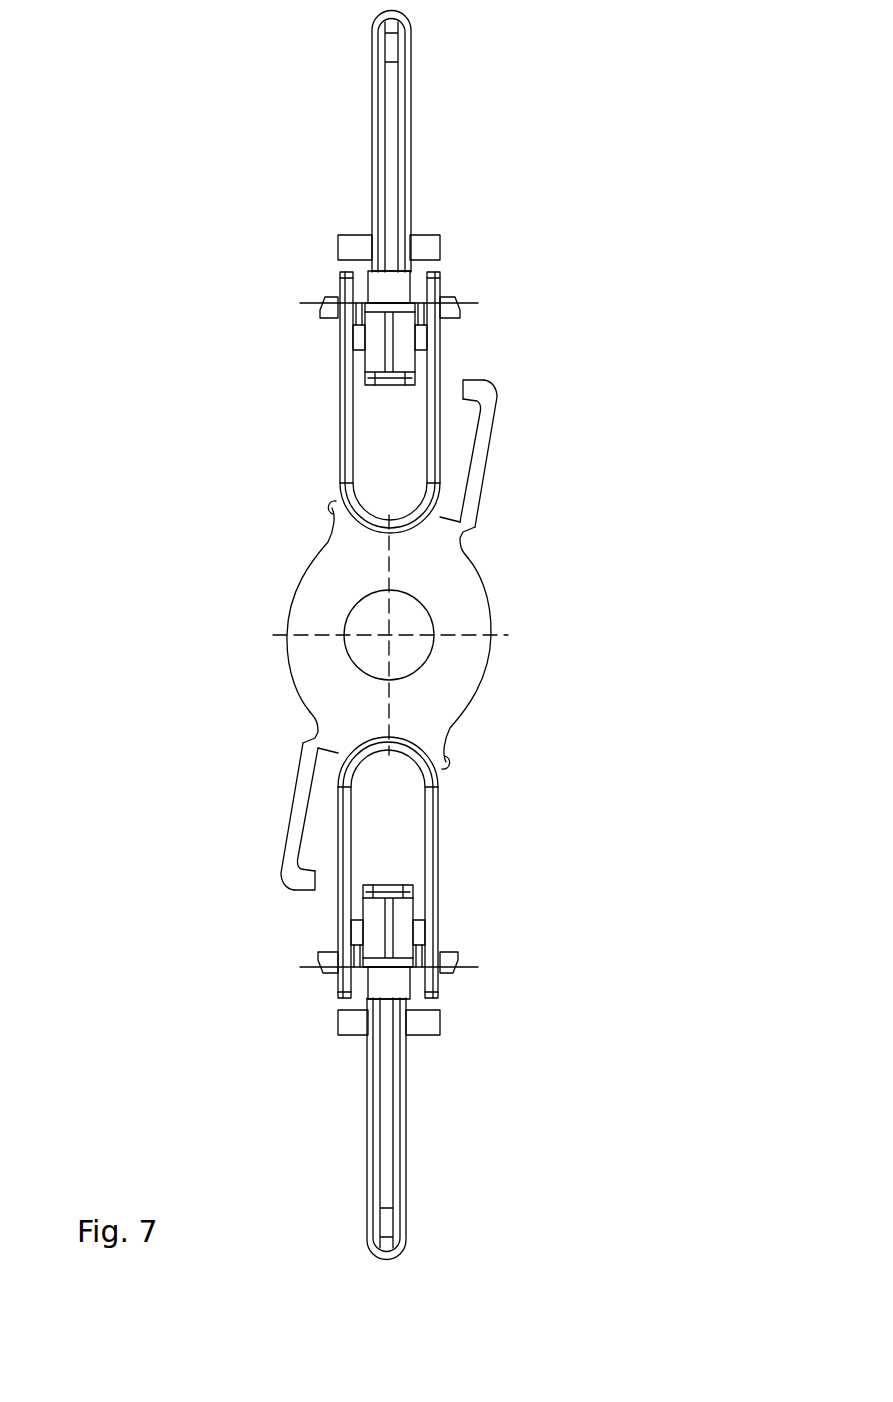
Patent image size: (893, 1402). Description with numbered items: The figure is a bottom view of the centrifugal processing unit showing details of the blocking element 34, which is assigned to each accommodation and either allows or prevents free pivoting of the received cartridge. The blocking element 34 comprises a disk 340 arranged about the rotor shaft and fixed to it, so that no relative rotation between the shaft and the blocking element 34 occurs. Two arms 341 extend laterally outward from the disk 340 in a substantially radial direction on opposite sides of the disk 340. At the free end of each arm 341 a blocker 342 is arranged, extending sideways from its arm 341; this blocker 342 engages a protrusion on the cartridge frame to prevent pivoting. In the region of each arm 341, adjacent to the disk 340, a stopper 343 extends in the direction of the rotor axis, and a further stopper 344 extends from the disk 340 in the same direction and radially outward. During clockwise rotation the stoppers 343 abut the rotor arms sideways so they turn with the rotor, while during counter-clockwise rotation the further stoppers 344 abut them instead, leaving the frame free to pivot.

The blocking element 34 is at (452, 635).
The disk 340 is at (462, 685).
The arms 341 is at (475, 475).
The blocker 342 is at (476, 392).
The stopper 343 is at (490, 550).
The further stopper 344 is at (333, 508).